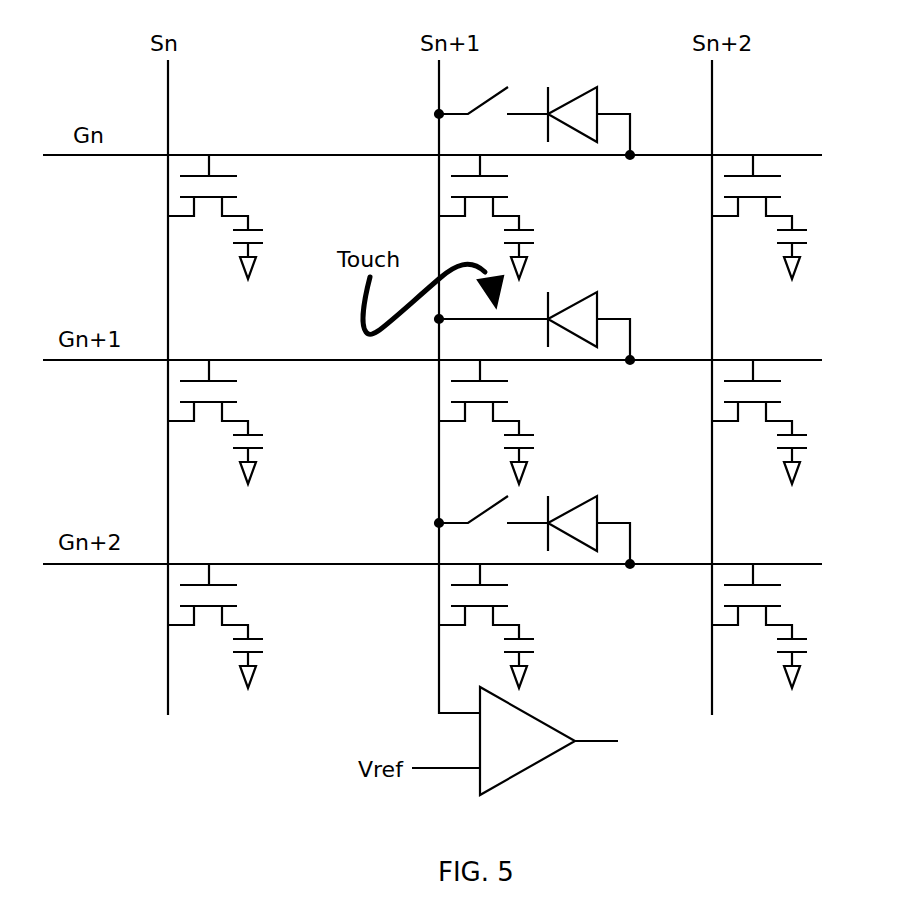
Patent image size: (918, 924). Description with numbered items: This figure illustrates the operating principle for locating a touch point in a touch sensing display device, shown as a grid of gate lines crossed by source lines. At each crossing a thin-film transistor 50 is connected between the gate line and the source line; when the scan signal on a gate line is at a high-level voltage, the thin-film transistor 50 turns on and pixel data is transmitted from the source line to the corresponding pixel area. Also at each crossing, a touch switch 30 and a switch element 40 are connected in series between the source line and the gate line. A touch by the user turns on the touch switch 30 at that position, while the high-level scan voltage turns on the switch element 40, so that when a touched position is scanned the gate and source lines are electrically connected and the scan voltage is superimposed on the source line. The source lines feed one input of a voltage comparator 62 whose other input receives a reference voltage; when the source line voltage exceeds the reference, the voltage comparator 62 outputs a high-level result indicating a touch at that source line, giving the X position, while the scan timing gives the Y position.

The touch switch 30 is at (475, 500).
The switch element 40 is at (602, 490).
The thin-film transistor 50 is at (520, 392).
The voltage comparator 62 is at (532, 767).